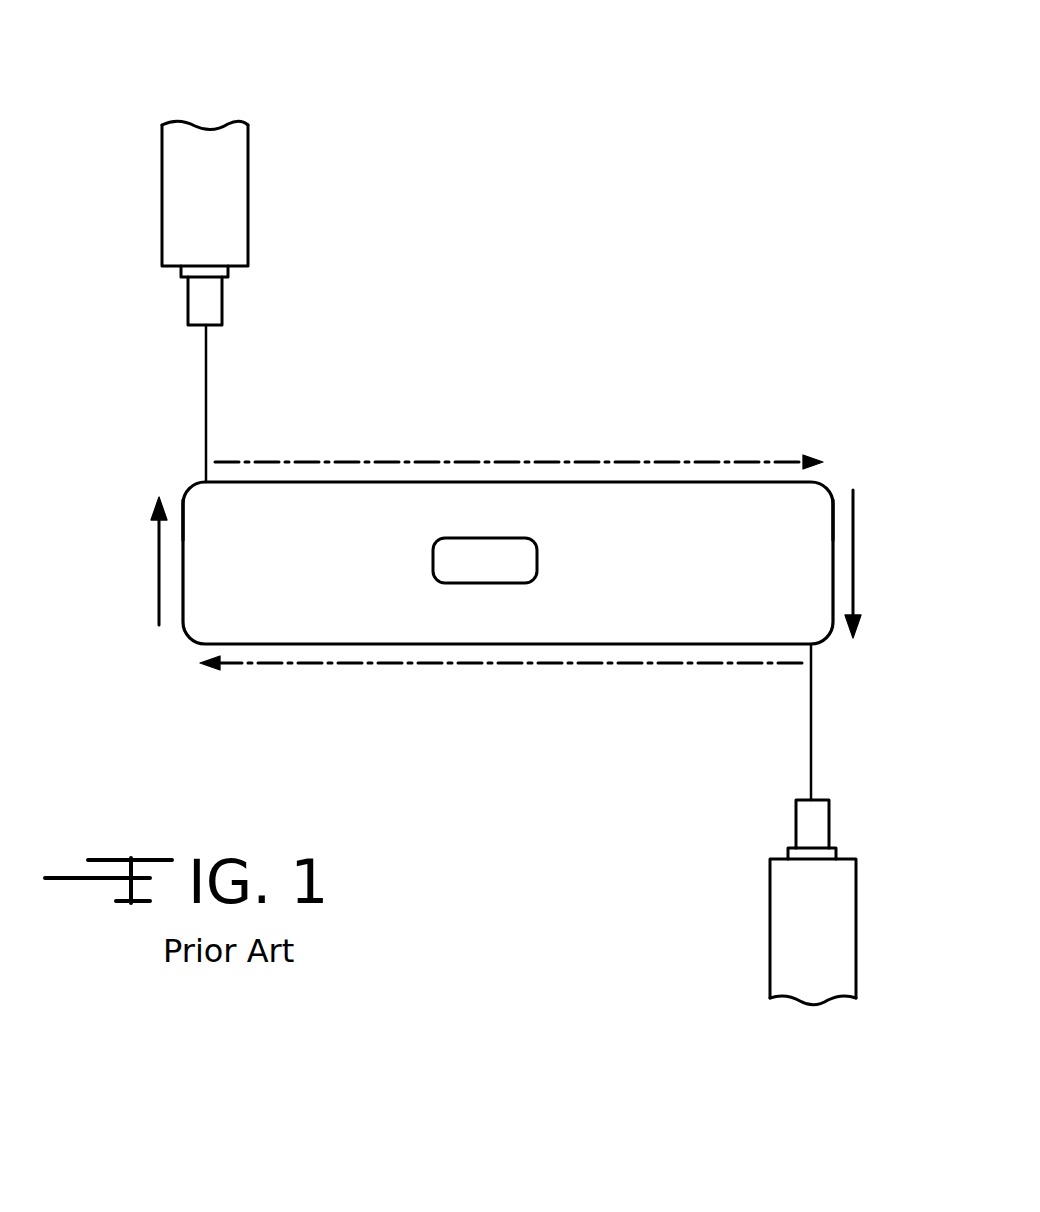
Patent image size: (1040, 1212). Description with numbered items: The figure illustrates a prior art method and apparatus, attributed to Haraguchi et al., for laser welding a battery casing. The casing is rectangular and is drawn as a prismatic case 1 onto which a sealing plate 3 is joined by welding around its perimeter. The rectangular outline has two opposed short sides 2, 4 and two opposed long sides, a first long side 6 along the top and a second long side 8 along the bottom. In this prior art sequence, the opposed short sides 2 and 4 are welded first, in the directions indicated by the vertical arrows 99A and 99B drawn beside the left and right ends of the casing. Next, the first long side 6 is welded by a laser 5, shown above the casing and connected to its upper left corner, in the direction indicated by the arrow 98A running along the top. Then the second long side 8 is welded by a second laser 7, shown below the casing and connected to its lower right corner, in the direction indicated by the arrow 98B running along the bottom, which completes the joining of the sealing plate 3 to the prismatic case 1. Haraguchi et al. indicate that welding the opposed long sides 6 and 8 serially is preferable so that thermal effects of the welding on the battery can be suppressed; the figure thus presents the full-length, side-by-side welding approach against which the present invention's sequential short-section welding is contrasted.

The prismatic case 1 is at (596, 528).
The short side 2 is at (183, 522).
The sealing plate 3 is at (662, 517).
The short side 4 is at (838, 520).
The laser 5 is at (248, 194).
The first long side 6 is at (444, 485).
The laser 7 is at (857, 940).
The second long side 8 is at (577, 645).
The arrow 98A is at (737, 460).
The arrow 98B is at (403, 665).
The arrow 99A is at (159, 558).
The arrow 99B is at (857, 565).